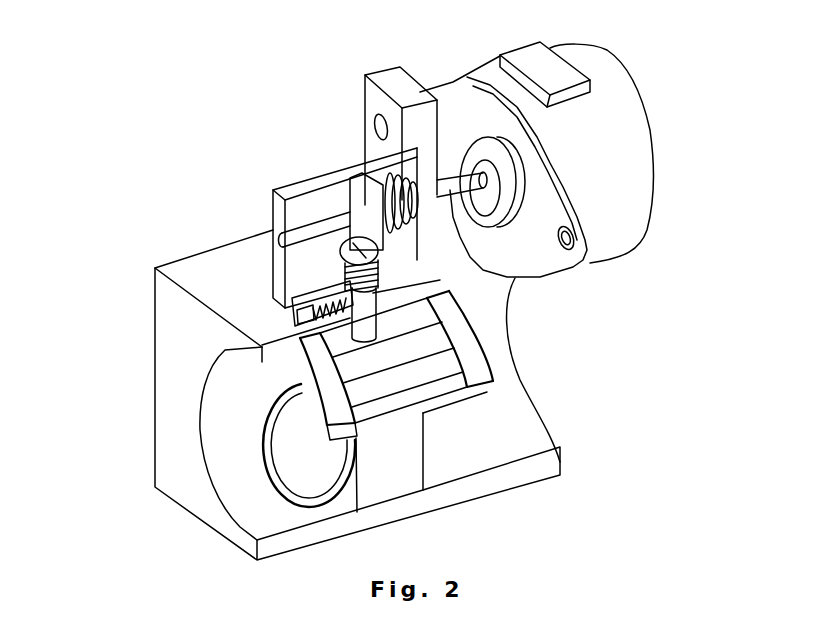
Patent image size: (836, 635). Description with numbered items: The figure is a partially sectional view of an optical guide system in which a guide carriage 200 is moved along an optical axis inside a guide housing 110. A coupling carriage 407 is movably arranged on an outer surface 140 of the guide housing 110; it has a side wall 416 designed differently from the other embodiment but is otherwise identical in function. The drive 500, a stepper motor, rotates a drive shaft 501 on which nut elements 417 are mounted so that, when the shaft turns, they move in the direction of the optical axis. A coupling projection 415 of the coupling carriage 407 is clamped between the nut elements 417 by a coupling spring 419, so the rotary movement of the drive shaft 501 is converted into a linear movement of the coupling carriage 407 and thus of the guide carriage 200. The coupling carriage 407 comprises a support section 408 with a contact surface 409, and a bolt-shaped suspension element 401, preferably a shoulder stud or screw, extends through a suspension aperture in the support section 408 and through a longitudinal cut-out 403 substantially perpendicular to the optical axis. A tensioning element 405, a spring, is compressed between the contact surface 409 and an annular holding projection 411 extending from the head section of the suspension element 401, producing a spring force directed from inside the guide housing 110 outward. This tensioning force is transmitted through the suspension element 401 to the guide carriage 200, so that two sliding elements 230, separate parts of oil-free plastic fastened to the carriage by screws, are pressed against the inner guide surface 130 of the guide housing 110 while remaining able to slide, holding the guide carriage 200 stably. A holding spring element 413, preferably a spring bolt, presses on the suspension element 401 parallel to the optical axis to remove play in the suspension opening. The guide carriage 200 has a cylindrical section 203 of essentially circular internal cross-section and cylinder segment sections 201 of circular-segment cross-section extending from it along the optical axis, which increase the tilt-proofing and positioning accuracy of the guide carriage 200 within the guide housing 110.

The guide housing 110 is at (177, 487).
The inner guide surface 130 is at (233, 483).
The outer surface 140 is at (260, 295).
The guide carriage 200 is at (444, 440).
The cylinder segment section 201 is at (317, 423).
The cylindrical section 203 is at (380, 497).
The sliding element 230 is at (302, 379).
The suspension element 401 is at (400, 303).
The cut-out 403 is at (285, 334).
The tensioning element 405 is at (368, 307).
The coupling carriage 407 is at (262, 188).
The support section 408 is at (276, 312).
The contact surface 409 is at (320, 292).
The holding projection 411 is at (380, 254).
The holding spring element 413 is at (337, 292).
The coupling projection 415 is at (389, 205).
The side wall 416 is at (327, 210).
The nut element 417 is at (410, 193).
The coupling spring 419 is at (386, 172).
The drive 500 is at (654, 127).
The drive shaft 501 is at (473, 177).